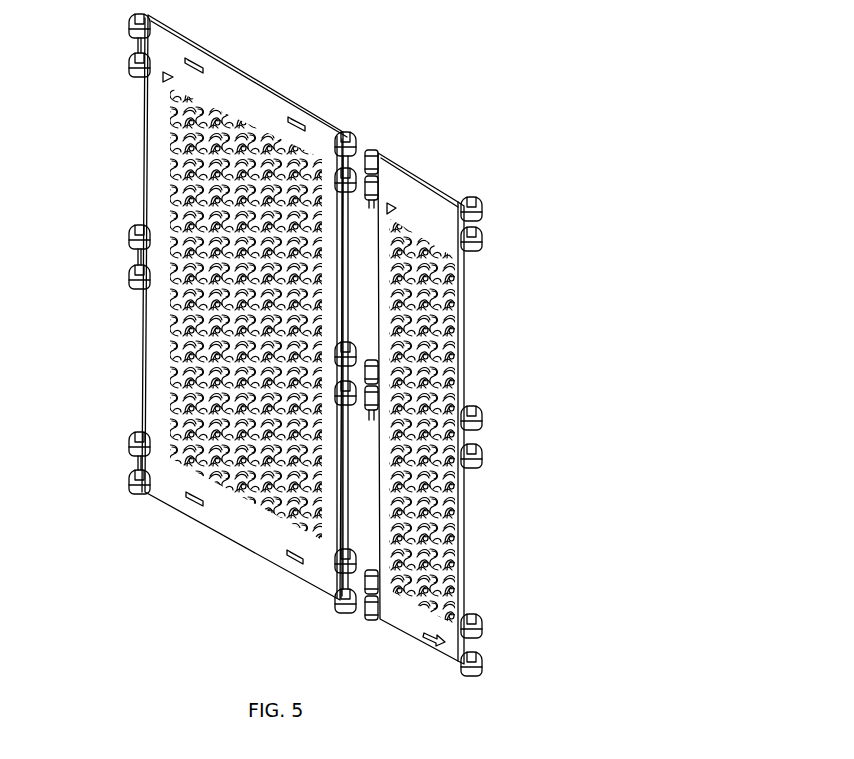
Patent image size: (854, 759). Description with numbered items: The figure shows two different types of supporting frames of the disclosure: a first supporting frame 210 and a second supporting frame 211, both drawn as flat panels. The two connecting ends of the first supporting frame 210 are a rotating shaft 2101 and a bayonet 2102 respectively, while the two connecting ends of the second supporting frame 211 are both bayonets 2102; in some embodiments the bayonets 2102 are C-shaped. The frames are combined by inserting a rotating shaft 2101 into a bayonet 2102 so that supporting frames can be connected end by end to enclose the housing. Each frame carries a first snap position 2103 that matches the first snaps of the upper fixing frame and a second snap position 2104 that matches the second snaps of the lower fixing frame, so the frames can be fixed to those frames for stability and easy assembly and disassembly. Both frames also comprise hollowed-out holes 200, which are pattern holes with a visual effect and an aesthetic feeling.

The hollowed-out holes 200 is at (186, 158).
The first supporting frame 210 is at (432, 200).
The second supporting frame 211 is at (160, 370).
The rotating shaft 2101 is at (372, 152).
The bayonet 2102 is at (136, 230).
The first snap position 2103 is at (295, 117).
The second snap position 2104 is at (188, 501).